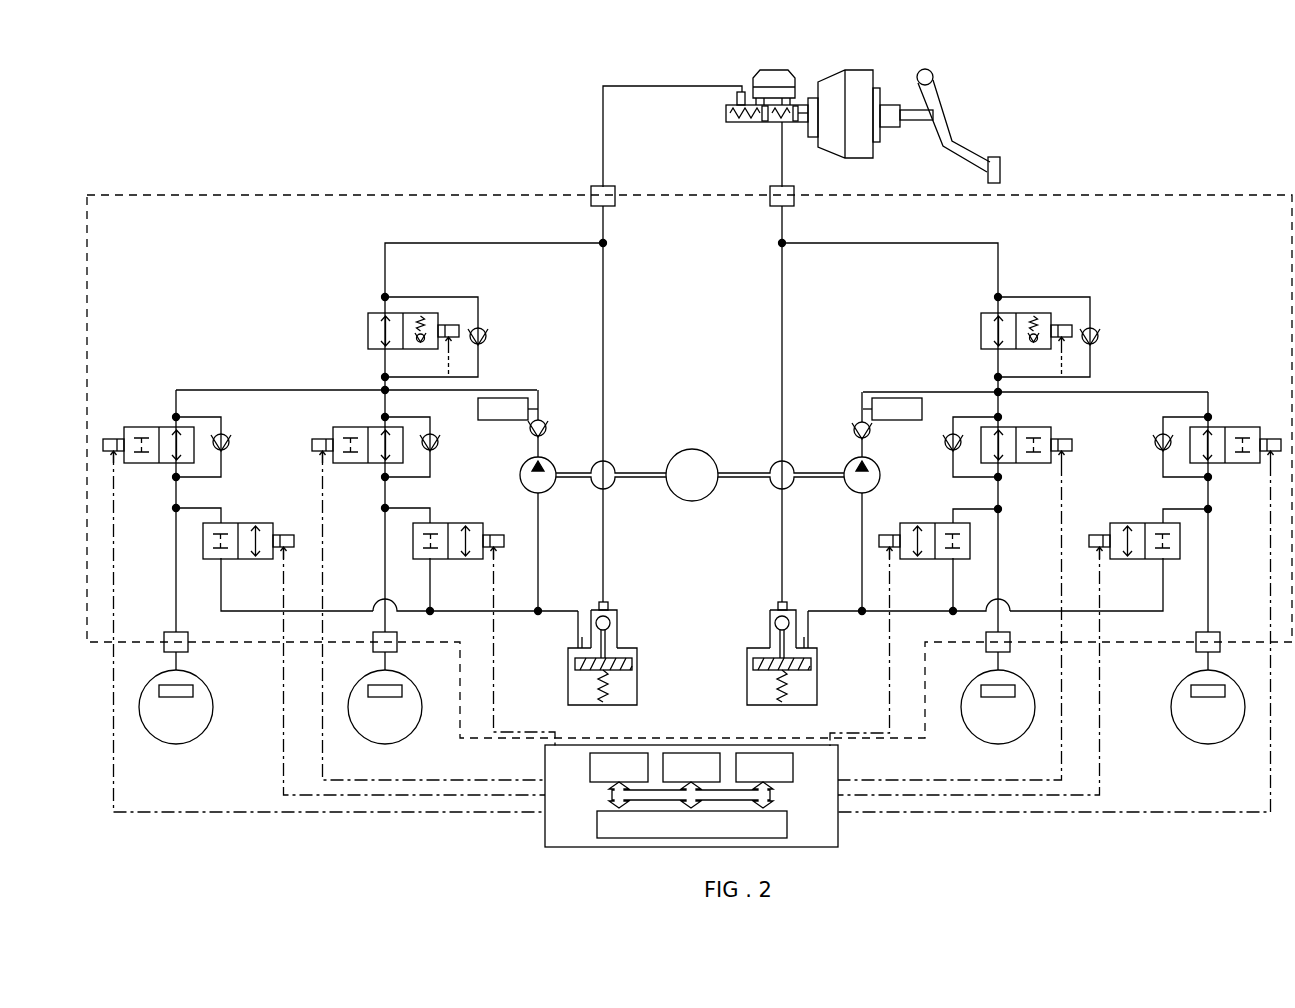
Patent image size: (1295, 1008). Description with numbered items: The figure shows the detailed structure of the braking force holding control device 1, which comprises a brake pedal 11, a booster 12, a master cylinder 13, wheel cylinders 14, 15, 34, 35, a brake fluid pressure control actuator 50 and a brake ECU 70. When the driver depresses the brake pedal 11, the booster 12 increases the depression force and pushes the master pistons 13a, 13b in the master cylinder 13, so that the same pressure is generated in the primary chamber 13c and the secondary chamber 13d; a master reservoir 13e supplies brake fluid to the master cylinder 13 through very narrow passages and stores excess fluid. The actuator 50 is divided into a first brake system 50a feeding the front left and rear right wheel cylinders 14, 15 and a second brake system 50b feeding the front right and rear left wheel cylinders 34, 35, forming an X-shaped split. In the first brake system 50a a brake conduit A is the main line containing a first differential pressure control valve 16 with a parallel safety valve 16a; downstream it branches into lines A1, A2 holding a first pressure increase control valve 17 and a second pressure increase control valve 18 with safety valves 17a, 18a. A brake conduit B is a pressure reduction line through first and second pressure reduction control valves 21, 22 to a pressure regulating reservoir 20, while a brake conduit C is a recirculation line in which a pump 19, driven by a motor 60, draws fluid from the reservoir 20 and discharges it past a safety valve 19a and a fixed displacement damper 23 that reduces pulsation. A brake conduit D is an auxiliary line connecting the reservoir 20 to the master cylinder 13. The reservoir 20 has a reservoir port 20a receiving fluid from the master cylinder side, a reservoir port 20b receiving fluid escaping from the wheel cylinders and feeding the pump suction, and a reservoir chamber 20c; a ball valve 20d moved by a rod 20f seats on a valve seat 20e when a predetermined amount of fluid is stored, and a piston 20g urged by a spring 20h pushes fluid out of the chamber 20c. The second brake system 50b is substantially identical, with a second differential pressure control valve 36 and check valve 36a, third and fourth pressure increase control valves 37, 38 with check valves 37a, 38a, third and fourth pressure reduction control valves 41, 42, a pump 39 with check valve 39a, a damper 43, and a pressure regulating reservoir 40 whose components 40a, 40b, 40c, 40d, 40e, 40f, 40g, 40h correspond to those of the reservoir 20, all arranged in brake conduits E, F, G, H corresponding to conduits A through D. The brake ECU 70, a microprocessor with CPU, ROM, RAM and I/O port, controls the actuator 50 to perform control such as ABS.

The braking force holding control device 1 is at (1078, 54).
The brake pedal 11 is at (950, 98).
The booster 12 is at (857, 70).
The master cylinder 13 is at (754, 115).
The master piston 13a is at (765, 122).
The master piston 13b is at (800, 122).
The primary chamber 13c is at (740, 122).
The secondary chamber 13d is at (788, 122).
The master reservoir 13e is at (774, 72).
The wheel cylinder 14 is at (158, 690).
The wheel cylinder 15 is at (370, 690).
The first differential pressure control valve 16 is at (367, 332).
The safety valve 16a is at (472, 326).
The first pressure increase control valve 17 is at (170, 417).
The safety valve 17a is at (228, 436).
The second pressure increase control valve 18 is at (376, 418).
The safety valve 18a is at (440, 440).
The pump 19 is at (520, 475).
The safety valve 19a is at (545, 422).
The pressure regulating reservoir 20 is at (594, 645).
The reservoir port 20a is at (639, 602).
The reservoir port 20b is at (576, 637).
The reservoir chamber 20c is at (568, 650).
The ball valve 20d is at (618, 612).
The valve seat 20e is at (612, 623).
The rod 20f is at (608, 643).
The piston 20g is at (632, 666).
The spring 20h is at (605, 698).
The first pressure reduction control valve 21 is at (225, 523).
The second pressure reduction control valve 22 is at (445, 523).
The fixed displacement damper 23 is at (520, 398).
The wheel cylinder 34 is at (1225, 690).
The wheel cylinder 35 is at (1016, 690).
The second differential pressure control valve 36 is at (980, 334).
The check valve 36a is at (1085, 326).
The third pressure increase control valve 37 is at (1215, 417).
The check valve 37a is at (1160, 436).
The fourth pressure increase control valve 38 is at (1005, 420).
The check valve 38a is at (947, 440).
The pump 39 is at (882, 477).
The check valve 39a is at (856, 426).
The pressure regulating reservoir 40 is at (796, 645).
The reservoir port 40a is at (747, 602).
The reservoir port 40b is at (810, 637).
The reservoir chamber 40c is at (817, 650).
The ball valve 40d is at (766, 612).
The valve seat 40e is at (773, 623).
The rod 40f is at (776, 643).
The piston 40g is at (753, 666).
The spring 40h is at (775, 698).
The third pressure reduction control valve 41 is at (1157, 523).
The fourth pressure reduction control valve 42 is at (935, 523).
The damper 43 is at (875, 398).
The brake fluid pressure control actuator 50 is at (424, 192).
The first brake system 50a is at (254, 296).
The second brake system 50b is at (1156, 296).
The motor 60 is at (680, 452).
The brake ECU 70 is at (838, 838).
The brake conduit A is at (410, 244).
The line A1 is at (174, 572).
The line A2 is at (381, 558).
The brake conduit B is at (450, 614).
The brake conduit C is at (502, 392).
The brake conduit D is at (606, 340).
The brake conduit E is at (975, 244).
The brake conduit F is at (940, 614).
The brake conduit G is at (880, 394).
The brake conduit H is at (780, 340).